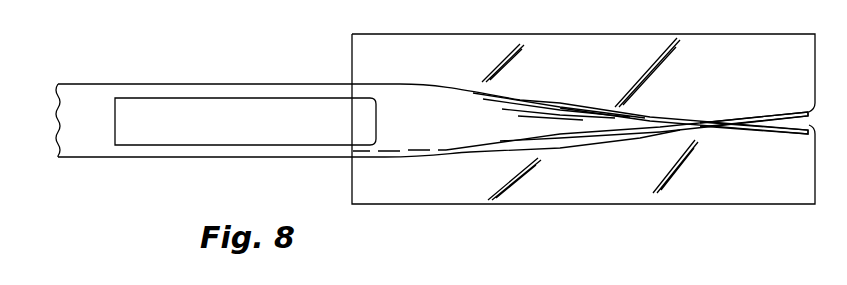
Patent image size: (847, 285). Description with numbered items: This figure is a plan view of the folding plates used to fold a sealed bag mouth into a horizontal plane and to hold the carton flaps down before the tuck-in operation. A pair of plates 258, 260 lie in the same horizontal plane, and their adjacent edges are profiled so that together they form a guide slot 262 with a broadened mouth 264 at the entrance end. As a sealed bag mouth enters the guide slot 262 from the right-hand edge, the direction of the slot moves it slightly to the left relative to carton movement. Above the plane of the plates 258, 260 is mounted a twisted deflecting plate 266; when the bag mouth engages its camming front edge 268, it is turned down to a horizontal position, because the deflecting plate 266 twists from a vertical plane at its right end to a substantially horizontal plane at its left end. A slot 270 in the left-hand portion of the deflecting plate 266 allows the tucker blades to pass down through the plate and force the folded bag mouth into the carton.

The plate 258 is at (632, 17).
The plate 260 is at (116, 78).
The slot 270 is at (212, 103).
The guide slot 262 is at (593, 145).
The twisted deflecting plate 266 is at (719, 98).
The broadened mouth 264 is at (807, 112).
The camming front edge 268 is at (786, 133).